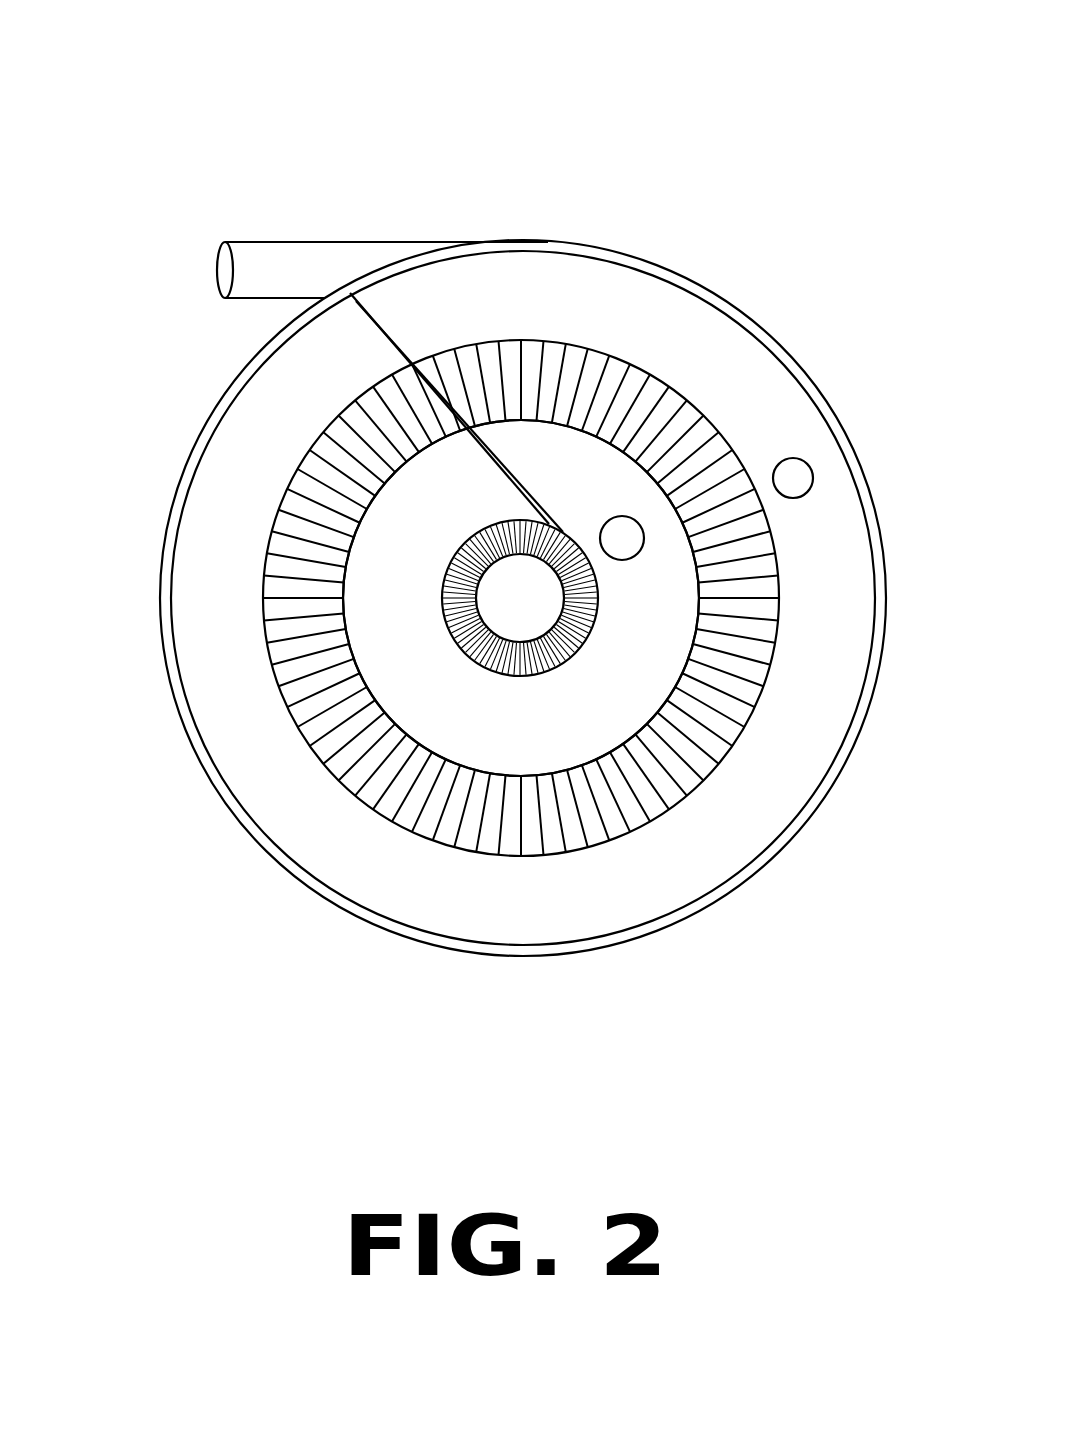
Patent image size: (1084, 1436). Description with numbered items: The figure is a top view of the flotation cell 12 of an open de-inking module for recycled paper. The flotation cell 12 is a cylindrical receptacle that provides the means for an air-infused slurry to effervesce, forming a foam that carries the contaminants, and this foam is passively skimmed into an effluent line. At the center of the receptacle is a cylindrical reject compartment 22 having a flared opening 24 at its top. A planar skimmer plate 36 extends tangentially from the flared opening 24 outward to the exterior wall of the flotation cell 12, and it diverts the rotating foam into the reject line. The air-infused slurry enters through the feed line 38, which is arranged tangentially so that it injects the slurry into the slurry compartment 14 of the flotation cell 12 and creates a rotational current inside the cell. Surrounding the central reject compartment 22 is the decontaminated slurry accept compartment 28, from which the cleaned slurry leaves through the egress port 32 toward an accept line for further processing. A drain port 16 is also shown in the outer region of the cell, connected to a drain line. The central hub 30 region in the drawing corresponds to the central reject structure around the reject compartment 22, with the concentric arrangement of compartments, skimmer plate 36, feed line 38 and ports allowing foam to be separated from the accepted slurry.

The flotation cell 12 is at (183, 135).
The slurry compartment 14 is at (188, 643).
The drain port 16 is at (812, 472).
The reject compartment 22 is at (493, 613).
The flared opening 24 is at (541, 674).
The accept compartment 28 is at (672, 631).
The central hub 30 is at (543, 855).
The egress port 32 is at (612, 517).
The skimmer plate 36 is at (398, 325).
The feed line 38 is at (363, 242).